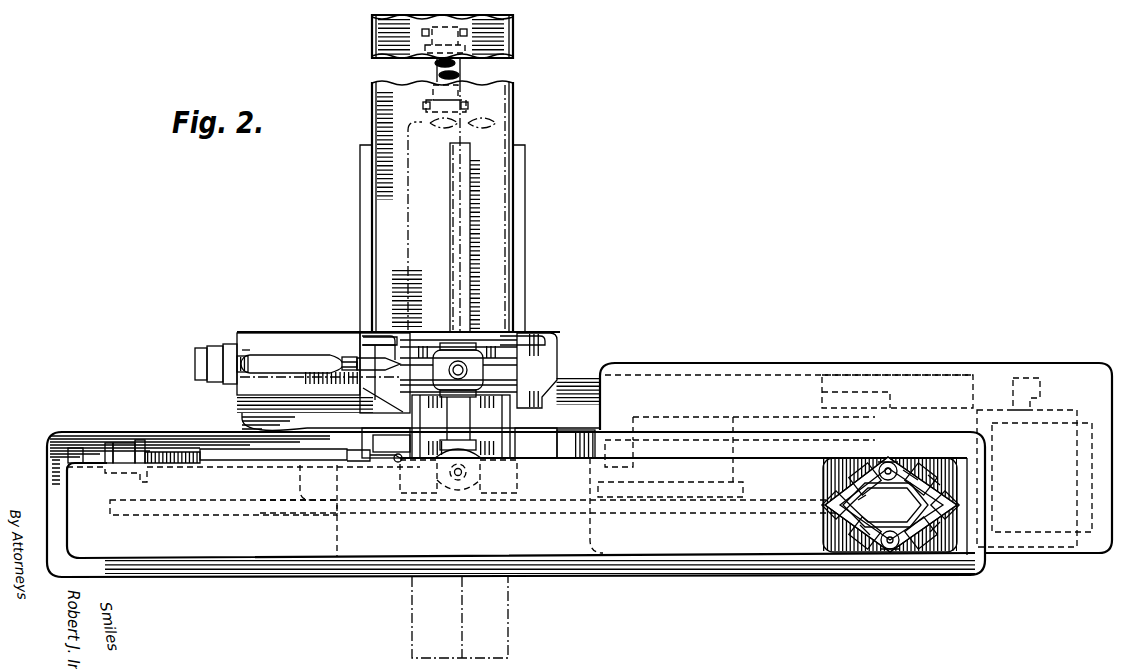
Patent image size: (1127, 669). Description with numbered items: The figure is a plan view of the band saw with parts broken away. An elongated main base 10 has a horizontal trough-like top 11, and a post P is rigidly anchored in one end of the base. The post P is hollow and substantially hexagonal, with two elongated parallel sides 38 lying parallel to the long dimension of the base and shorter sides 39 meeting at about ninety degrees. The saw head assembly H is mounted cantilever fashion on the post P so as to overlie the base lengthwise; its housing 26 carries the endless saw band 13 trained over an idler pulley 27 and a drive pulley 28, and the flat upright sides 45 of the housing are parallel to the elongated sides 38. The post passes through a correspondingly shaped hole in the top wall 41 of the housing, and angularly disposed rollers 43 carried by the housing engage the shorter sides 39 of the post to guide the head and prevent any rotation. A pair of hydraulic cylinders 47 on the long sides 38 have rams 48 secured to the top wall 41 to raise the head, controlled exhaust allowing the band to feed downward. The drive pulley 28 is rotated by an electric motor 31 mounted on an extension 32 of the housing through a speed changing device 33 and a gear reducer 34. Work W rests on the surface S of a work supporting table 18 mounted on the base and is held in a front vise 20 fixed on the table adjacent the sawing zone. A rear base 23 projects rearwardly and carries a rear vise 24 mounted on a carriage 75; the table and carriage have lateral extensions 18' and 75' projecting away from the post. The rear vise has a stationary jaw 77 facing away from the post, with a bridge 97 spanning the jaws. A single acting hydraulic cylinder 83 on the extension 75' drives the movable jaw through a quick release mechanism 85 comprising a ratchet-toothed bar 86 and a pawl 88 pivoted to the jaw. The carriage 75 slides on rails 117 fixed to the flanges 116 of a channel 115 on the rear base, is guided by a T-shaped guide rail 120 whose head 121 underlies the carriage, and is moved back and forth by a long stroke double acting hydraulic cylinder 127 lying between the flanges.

The main base 10 is at (727, 558).
The trough-like top 11 is at (568, 568).
The saw band 13 is at (433, 512).
The work supporting table 18 is at (453, 433).
The lateral extension of the work table 18' is at (114, 430).
The front vise 20 is at (597, 435).
The rear base 23 is at (355, 194).
The rear vise 24 is at (551, 315).
The housing 26 is at (685, 547).
The idler pulley 27 is at (220, 516).
The drive pulley 28 is at (398, 318).
The electric motor 31 is at (1053, 395).
The extension 32 is at (1062, 552).
The speed changing device 33 is at (860, 387).
The gear reducer 34 is at (735, 448).
The elongated sides of the post 38 is at (920, 468).
The shorter sides of the post 39 is at (940, 470).
The top wall of the housing 41 is at (661, 537).
The rollers 43 is at (845, 486).
The upright sides of the housing 45 is at (613, 560).
The hydraulic cylinders 47 is at (903, 462).
The rams 48 is at (888, 465).
The carriage 75 is at (299, 333).
The lateral extension of the carriage 75' is at (288, 331).
The stationary jaw 77 is at (557, 340).
The hydraulic cylinder 83 is at (222, 346).
The quick release mechanism 85 is at (288, 334).
The bar 86 is at (240, 373).
The pawl 88 is at (335, 355).
The crosspiece or bridge 97 is at (497, 334).
The channel 115 is at (496, 96).
The flanges 116 is at (372, 110).
The rails 117 is at (365, 217).
The guide rail 120 is at (465, 148).
The head of the guide rail 121 is at (452, 184).
The double acting hydraulic cylinder 127 is at (455, 76).
The saw head assembly H is at (362, 545).
The post P is at (910, 511).
The work supporting surface S is at (567, 395).
The work W is at (425, 626).